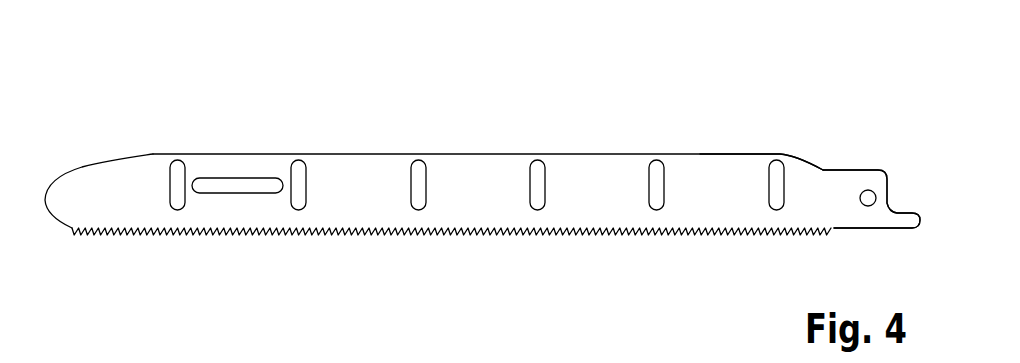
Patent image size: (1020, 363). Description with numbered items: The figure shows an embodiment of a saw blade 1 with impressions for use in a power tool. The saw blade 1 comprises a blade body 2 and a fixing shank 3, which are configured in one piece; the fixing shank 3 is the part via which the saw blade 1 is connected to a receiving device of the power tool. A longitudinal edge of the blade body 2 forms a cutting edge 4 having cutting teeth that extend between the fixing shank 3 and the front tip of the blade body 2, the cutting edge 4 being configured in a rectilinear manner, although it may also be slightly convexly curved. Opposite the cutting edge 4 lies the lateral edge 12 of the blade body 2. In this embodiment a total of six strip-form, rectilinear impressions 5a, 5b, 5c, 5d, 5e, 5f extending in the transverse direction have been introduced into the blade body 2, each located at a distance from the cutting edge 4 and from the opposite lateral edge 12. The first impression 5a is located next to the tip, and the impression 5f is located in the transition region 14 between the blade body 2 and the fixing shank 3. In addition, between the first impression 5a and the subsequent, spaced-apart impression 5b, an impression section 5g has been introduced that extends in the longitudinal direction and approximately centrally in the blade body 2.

The saw blade 1 is at (786, 126).
The blade body 2 is at (338, 154).
The fixing shank 3 is at (850, 213).
The cutting edge 4 is at (466, 236).
The impression 5a is at (178, 200).
The impression 5b is at (298, 200).
The impression 5c is at (418, 200).
The impression 5d is at (538, 200).
The impression 5e is at (656, 200).
The impression 5f is at (776, 200).
The impression section 5g is at (243, 187).
The lateral edge 12 is at (703, 154).
The transition region 14 is at (823, 193).